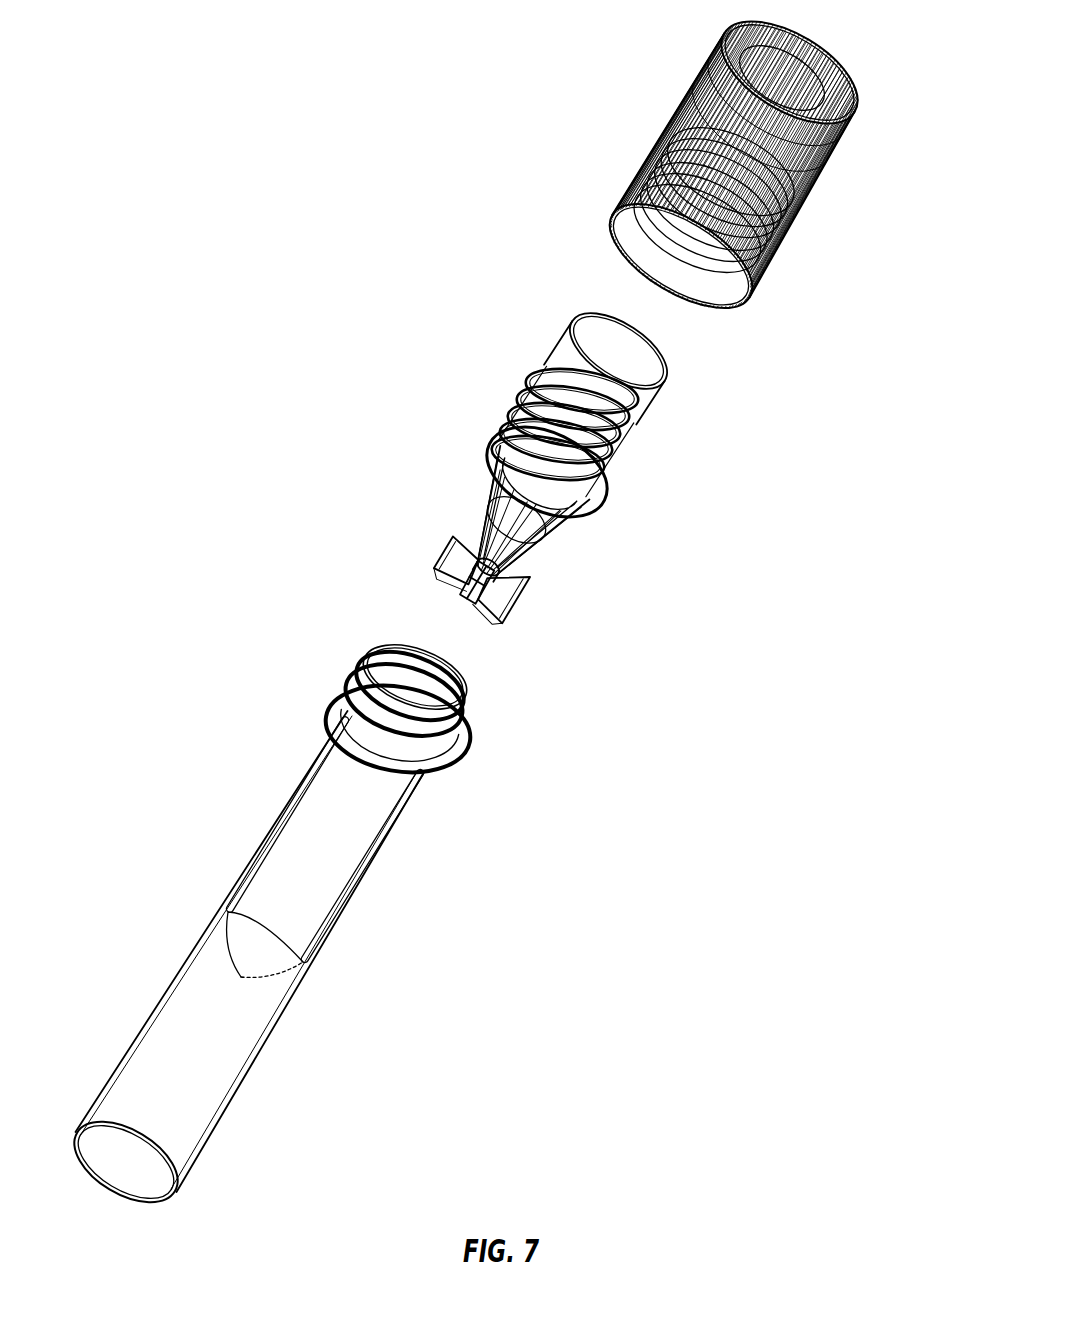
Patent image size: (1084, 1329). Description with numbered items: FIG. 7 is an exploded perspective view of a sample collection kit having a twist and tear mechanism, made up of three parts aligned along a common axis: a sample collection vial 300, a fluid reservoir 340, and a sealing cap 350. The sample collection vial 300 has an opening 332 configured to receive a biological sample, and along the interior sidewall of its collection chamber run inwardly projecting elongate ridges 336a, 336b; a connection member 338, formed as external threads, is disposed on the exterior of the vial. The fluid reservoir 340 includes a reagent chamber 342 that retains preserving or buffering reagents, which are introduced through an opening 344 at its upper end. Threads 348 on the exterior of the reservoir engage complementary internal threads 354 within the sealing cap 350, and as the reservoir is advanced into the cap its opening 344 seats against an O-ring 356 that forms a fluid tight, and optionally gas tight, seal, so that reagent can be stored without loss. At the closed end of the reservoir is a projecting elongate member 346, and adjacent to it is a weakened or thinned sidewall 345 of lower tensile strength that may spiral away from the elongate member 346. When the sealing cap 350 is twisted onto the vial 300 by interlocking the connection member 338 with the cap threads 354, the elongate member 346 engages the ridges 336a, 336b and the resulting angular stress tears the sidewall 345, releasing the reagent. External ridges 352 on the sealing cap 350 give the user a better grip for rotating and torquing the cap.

The sample collection vial 300 is at (313, 909).
The opening 332 is at (427, 677).
The elongate ridge 336a is at (232, 888).
The elongate ridge 336b is at (348, 903).
The connection member 338 is at (355, 663).
The fluid reservoir 340 is at (566, 489).
The reagent chamber 342 is at (498, 481).
The opening 344 is at (620, 353).
The sidewall 345 is at (513, 527).
The elongate member 346 is at (508, 600).
The threads 348 is at (530, 428).
The sealing cap 350 is at (735, 164).
The external ridges 352 is at (834, 157).
The internal threads 354 is at (658, 167).
The O-ring 356 is at (710, 53).